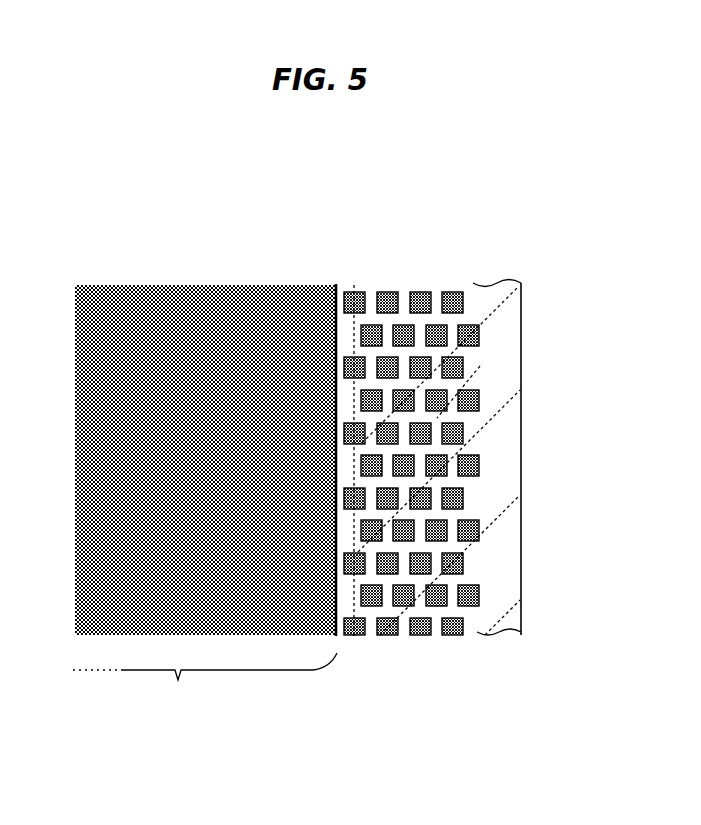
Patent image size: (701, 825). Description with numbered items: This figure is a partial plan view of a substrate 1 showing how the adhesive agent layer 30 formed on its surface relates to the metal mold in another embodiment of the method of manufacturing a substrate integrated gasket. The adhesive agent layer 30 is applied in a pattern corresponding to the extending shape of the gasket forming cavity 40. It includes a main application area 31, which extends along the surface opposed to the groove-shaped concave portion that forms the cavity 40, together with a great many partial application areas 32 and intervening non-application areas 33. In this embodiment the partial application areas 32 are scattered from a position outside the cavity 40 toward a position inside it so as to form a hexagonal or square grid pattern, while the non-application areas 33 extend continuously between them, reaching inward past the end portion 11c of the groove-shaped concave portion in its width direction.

The substrate 1 is at (522, 425).
The end portion of groove-shaped concave portion 11c is at (352, 330).
The adhesive agent layer 30 is at (178, 427).
The main application area 31 is at (205, 684).
The partial application areas 32 is at (452, 288).
The non-application areas 33 is at (402, 383).
The cavity 40 is at (194, 336).